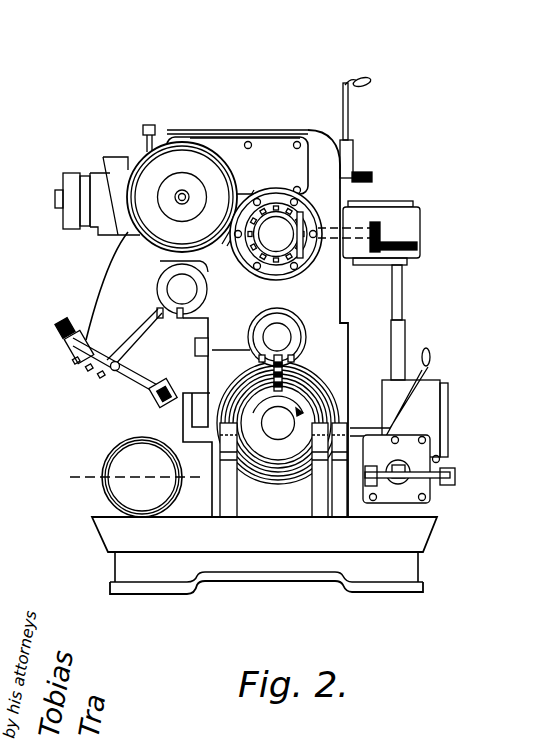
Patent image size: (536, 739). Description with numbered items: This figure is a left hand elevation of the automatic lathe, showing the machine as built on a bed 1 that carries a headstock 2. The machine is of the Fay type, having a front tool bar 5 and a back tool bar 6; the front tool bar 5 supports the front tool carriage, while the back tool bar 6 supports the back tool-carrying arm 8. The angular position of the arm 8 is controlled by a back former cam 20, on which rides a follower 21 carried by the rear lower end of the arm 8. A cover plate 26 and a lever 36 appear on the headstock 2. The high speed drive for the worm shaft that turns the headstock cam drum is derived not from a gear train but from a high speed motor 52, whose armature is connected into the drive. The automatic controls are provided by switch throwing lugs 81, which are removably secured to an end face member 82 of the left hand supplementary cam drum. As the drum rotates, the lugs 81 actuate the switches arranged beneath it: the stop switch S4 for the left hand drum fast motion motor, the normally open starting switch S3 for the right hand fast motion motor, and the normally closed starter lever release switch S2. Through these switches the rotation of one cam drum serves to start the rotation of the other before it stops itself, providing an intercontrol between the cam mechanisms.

The bed 1 is at (265, 542).
The headstock 2 is at (342, 299).
The front tool bar 5 is at (281, 333).
The back tool bar 6 is at (172, 288).
The back tool-carrying arm 8 is at (102, 272).
The back former cam 20 is at (137, 380).
The follower 21 is at (112, 374).
The cover plate 26 is at (317, 150).
The lever 36 is at (349, 114).
The high speed motor 52 is at (122, 460).
The switch throwing lugs 81 is at (308, 360).
The end face member 82 is at (334, 398).
The starter lever release switch S2 is at (342, 470).
The starting switch S3 is at (322, 470).
The stop switch S4 is at (230, 470).